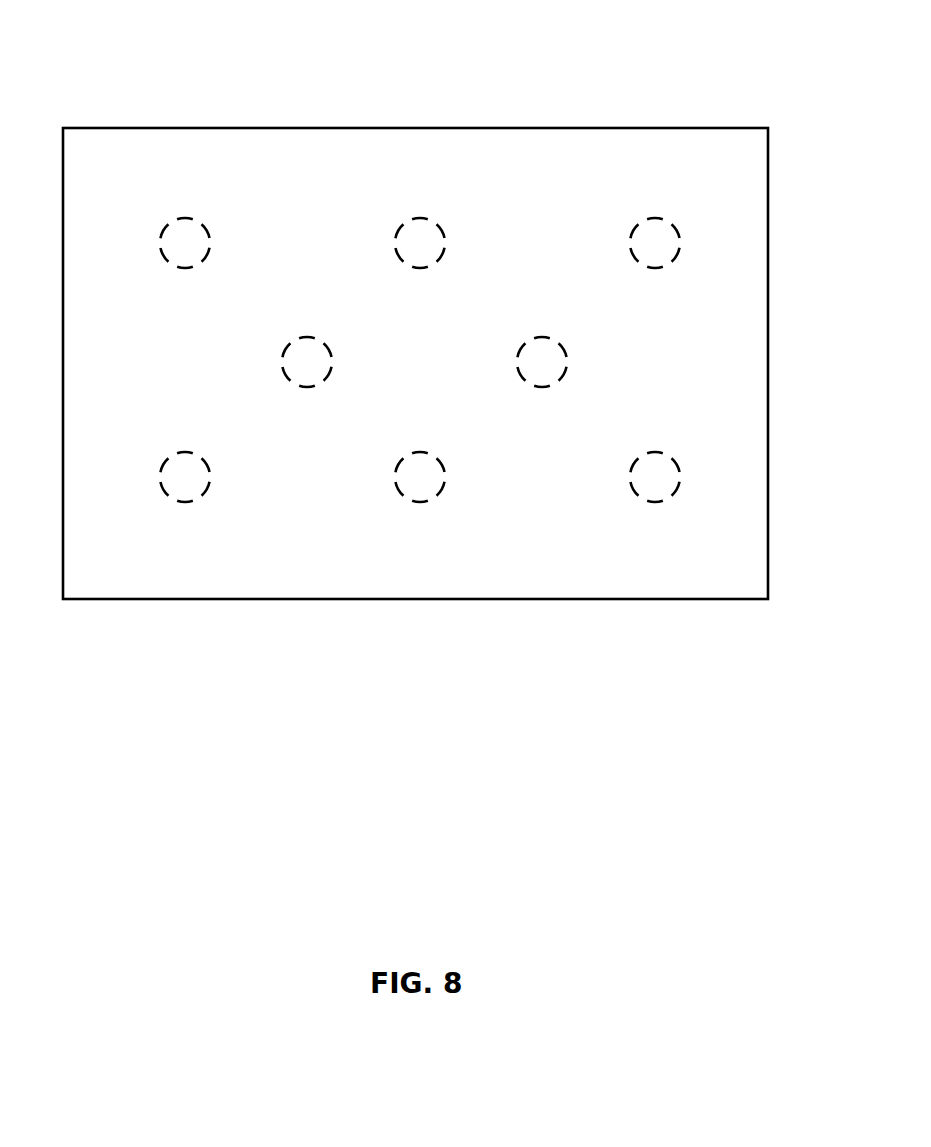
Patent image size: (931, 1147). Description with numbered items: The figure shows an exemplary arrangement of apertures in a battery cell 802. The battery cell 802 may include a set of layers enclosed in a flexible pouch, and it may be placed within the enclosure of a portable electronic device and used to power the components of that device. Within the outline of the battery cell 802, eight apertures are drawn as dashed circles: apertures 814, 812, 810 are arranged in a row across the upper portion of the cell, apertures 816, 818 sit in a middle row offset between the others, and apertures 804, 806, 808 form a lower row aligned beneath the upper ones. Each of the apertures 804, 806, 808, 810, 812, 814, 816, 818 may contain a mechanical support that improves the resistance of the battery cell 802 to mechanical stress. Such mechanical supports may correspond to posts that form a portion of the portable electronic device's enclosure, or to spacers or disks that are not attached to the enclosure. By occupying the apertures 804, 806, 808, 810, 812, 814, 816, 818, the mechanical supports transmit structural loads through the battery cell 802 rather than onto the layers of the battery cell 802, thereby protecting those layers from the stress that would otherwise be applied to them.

The battery cell 802 is at (768, 844).
The aperture 804 is at (180, 495).
The aperture 806 is at (415, 495).
The aperture 808 is at (650, 495).
The aperture 810 is at (649, 220).
The aperture 812 is at (415, 220).
The aperture 814 is at (181, 220).
The aperture 816 is at (303, 383).
The aperture 818 is at (540, 383).